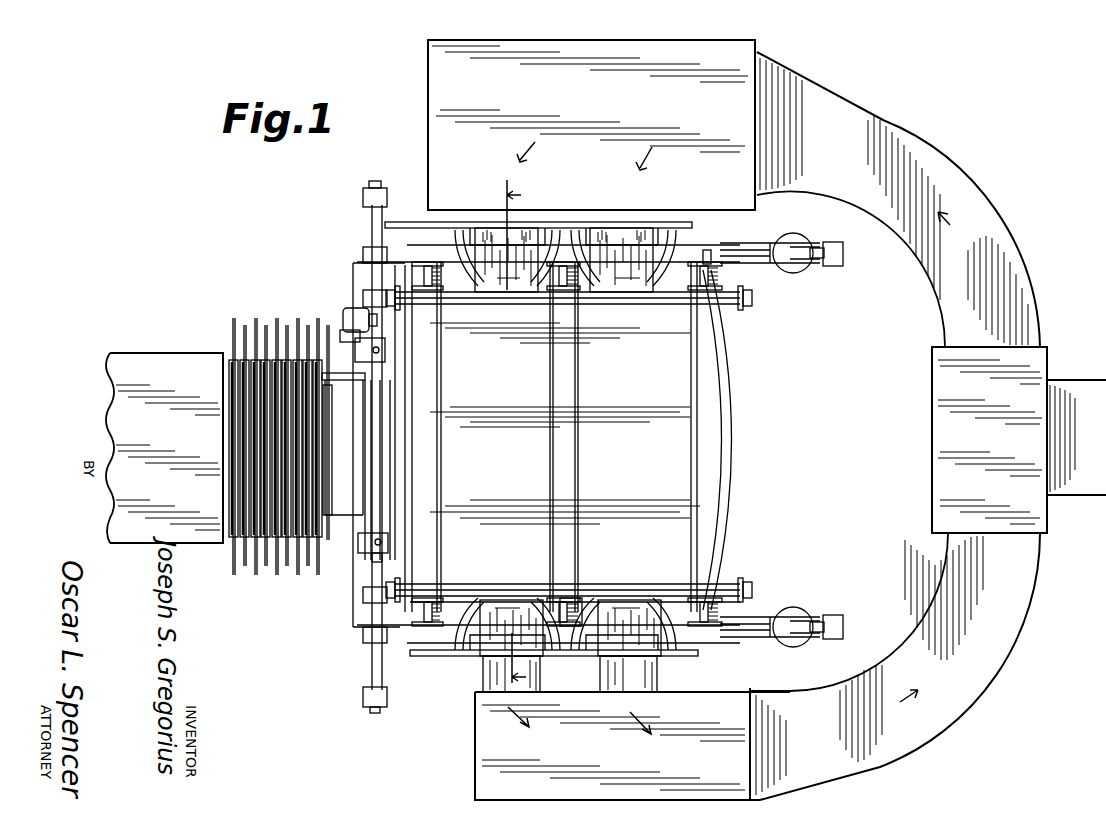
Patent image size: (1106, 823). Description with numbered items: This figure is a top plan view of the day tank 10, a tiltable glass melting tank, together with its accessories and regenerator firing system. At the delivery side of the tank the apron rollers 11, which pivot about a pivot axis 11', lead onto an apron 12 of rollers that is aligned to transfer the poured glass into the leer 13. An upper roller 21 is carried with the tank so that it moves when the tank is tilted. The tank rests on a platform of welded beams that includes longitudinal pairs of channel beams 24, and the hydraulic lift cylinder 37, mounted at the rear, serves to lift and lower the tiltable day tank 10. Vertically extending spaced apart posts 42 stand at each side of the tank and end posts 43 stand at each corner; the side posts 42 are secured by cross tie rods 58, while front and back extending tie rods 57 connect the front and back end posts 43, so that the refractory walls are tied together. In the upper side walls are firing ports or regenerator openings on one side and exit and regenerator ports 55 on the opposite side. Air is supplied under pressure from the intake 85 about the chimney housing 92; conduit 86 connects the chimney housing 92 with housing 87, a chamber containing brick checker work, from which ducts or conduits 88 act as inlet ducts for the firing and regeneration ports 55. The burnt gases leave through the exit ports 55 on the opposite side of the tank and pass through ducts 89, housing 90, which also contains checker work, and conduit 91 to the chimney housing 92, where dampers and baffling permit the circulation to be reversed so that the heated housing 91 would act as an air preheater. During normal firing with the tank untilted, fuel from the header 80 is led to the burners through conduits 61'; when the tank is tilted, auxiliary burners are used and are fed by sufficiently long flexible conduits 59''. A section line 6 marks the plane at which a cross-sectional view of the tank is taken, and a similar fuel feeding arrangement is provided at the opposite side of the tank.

The day tank 10 is at (757, 396).
The apron rollers 11 is at (343, 433).
The pivot axis 11' is at (347, 316).
The apron of rollers 12 is at (221, 335).
The leer 13 is at (156, 353).
The upper roller 21 is at (382, 423).
The longitudinal channel beams 24 is at (762, 262).
The hydraulic lift cylinder 37 is at (806, 286).
The side posts 42 is at (703, 270).
The end posts 43 is at (398, 303).
The firing and regenerator ports 55 is at (498, 278).
The tie rods 57 is at (682, 295).
The cross tie rods 58 is at (472, 252).
The flexible conduits 59'' is at (571, 440).
The fuel conduits 61' is at (588, 423).
The fuel header 80 is at (417, 221).
The air intake 85 is at (1088, 358).
The conduit 86 is at (952, 168).
The housing 87 is at (612, 103).
The inlet ducts 88 is at (500, 200).
The exit ducts 89 is at (495, 658).
The housing 90 is at (737, 675).
The conduit 91 is at (1000, 665).
The chimney housing 92 is at (932, 422).
The section line 6- 6 is at (521, 438).